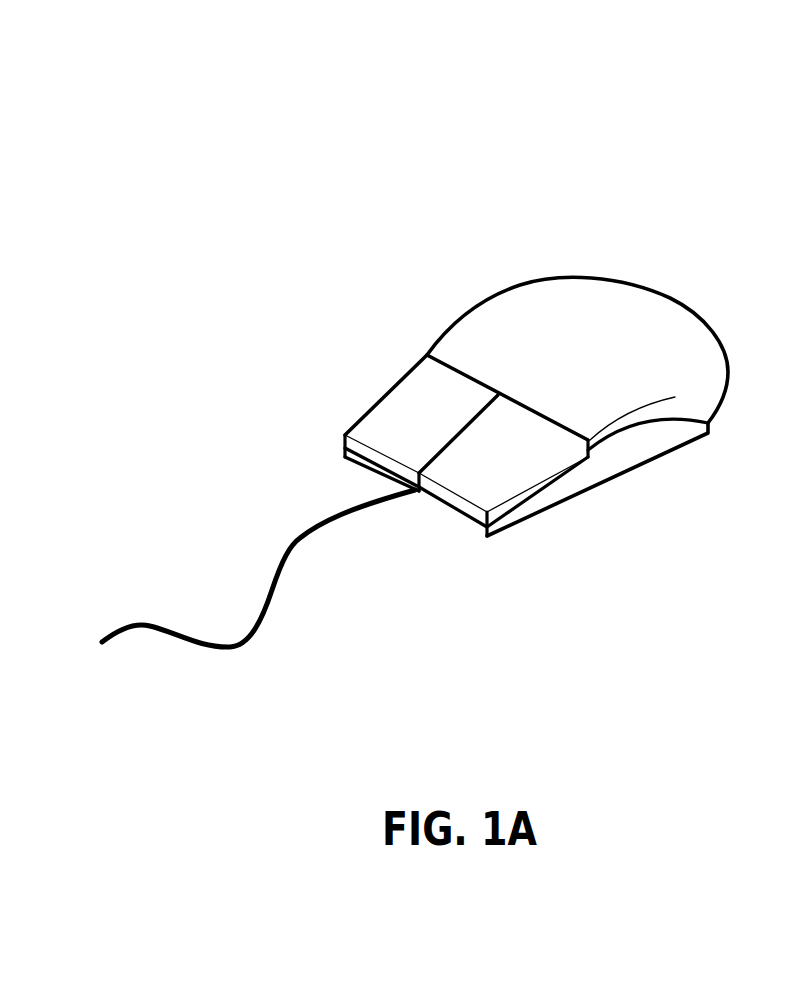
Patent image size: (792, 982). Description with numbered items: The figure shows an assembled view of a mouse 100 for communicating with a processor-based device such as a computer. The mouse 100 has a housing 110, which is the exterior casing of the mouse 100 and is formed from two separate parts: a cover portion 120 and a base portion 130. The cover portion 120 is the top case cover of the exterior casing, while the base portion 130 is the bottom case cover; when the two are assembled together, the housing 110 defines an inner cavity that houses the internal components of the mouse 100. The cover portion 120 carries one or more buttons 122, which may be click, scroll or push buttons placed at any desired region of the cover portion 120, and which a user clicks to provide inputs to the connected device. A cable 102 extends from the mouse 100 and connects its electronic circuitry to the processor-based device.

The mouse 100 is at (192, 141).
The cable 102 is at (295, 547).
The housing 110 is at (440, 338).
The cover portion 120 is at (568, 318).
The buttons 122 is at (407, 412).
The base portion 130 is at (612, 457).